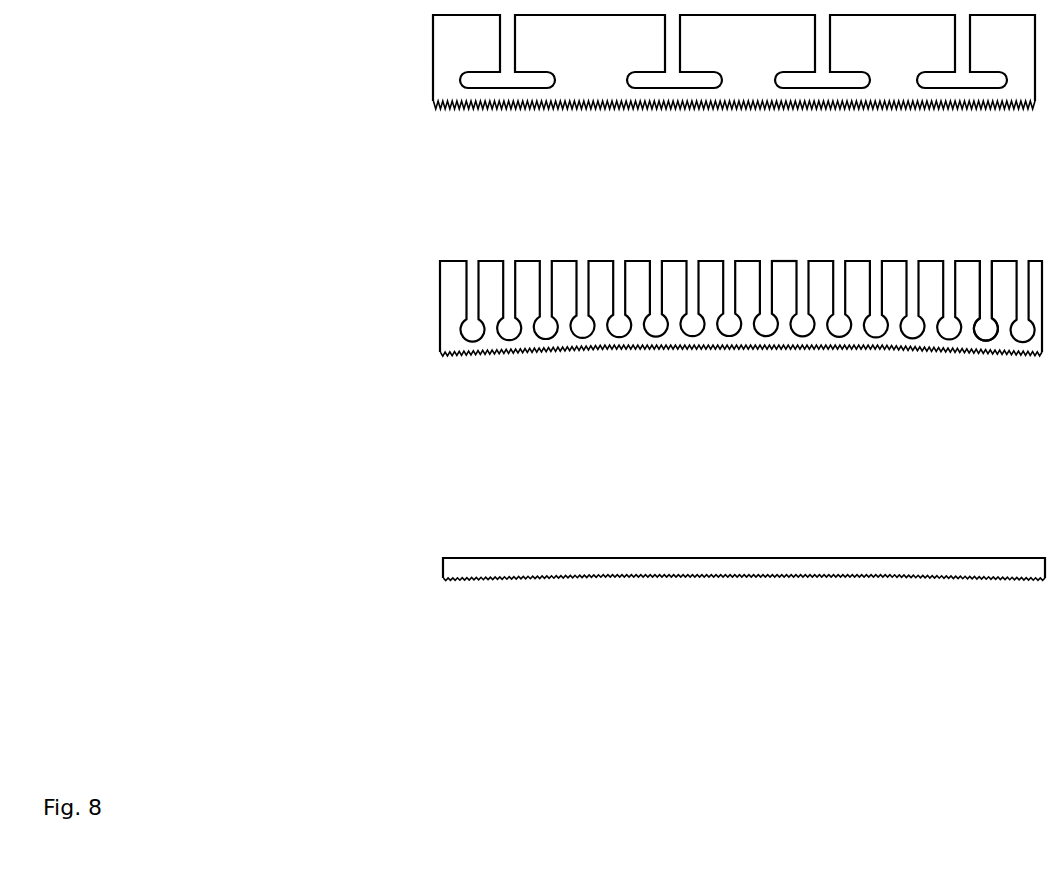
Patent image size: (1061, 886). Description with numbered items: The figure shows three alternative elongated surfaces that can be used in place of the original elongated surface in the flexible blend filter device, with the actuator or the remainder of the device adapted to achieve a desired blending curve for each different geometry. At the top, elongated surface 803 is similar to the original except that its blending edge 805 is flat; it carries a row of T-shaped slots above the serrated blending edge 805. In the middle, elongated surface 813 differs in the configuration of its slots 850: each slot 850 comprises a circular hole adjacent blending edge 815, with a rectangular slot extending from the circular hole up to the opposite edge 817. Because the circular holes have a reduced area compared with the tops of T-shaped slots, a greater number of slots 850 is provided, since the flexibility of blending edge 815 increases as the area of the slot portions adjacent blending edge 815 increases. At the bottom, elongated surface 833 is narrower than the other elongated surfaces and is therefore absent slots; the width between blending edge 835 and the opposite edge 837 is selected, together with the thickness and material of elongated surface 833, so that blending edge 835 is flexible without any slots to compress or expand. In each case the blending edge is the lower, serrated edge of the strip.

The elongated surface 803 is at (432, 65).
The blending edge 805 is at (573, 108).
The elongated surface 813 is at (443, 308).
The blending edge 815 is at (590, 353).
The opposite edge 817 is at (783, 260).
The slots 850 is at (985, 257).
The elongated surface 833 is at (442, 568).
The blending edge 835 is at (602, 575).
The opposite edge 837 is at (820, 558).